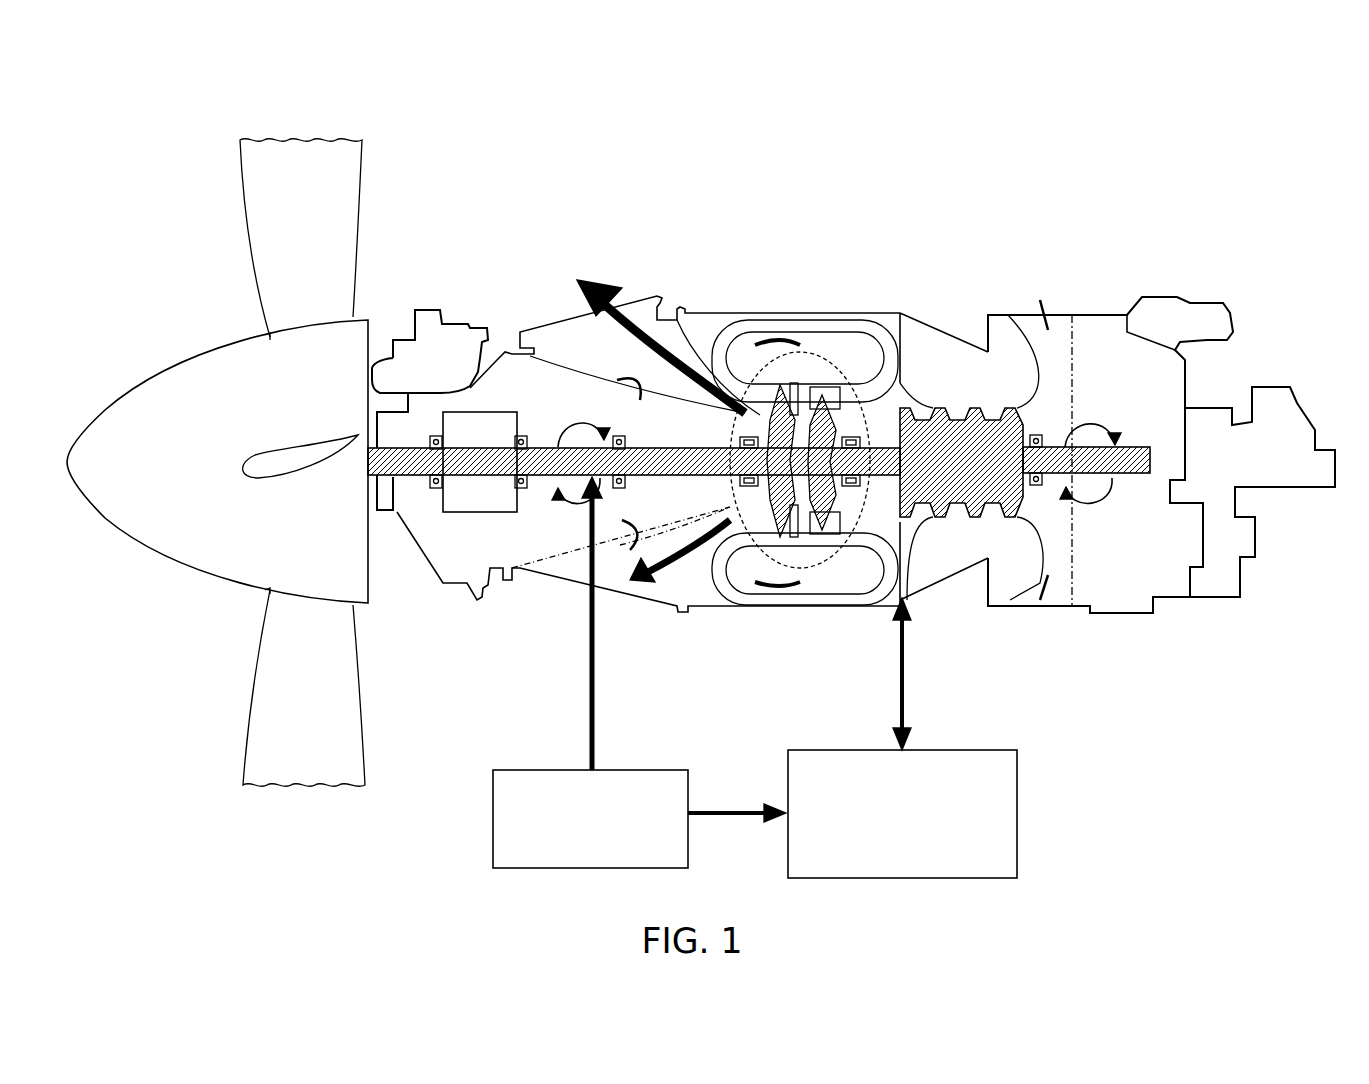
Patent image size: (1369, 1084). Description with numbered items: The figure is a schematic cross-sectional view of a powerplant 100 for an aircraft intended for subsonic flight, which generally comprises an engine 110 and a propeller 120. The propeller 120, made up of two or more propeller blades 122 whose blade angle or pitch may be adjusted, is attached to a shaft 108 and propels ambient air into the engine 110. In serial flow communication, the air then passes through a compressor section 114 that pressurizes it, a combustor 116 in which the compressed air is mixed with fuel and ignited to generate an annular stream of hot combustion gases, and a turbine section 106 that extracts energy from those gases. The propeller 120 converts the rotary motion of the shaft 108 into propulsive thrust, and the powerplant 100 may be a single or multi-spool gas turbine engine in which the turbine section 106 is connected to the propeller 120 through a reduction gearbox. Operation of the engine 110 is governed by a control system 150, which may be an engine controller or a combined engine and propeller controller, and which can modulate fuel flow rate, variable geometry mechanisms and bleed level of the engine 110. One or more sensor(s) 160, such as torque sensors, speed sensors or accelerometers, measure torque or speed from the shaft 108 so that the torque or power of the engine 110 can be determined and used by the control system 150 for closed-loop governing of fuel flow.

The powerplant 100 is at (976, 84).
The turbine section 106 is at (735, 487).
The shaft 108 is at (395, 463).
The engine 110 is at (382, 273).
The compressor section 114 is at (949, 523).
The combustor 116 is at (825, 348).
The propeller 120 is at (68, 128).
The propeller blades 122 is at (340, 192).
The control system 150 is at (878, 867).
The sensor(s) 160 is at (566, 853).